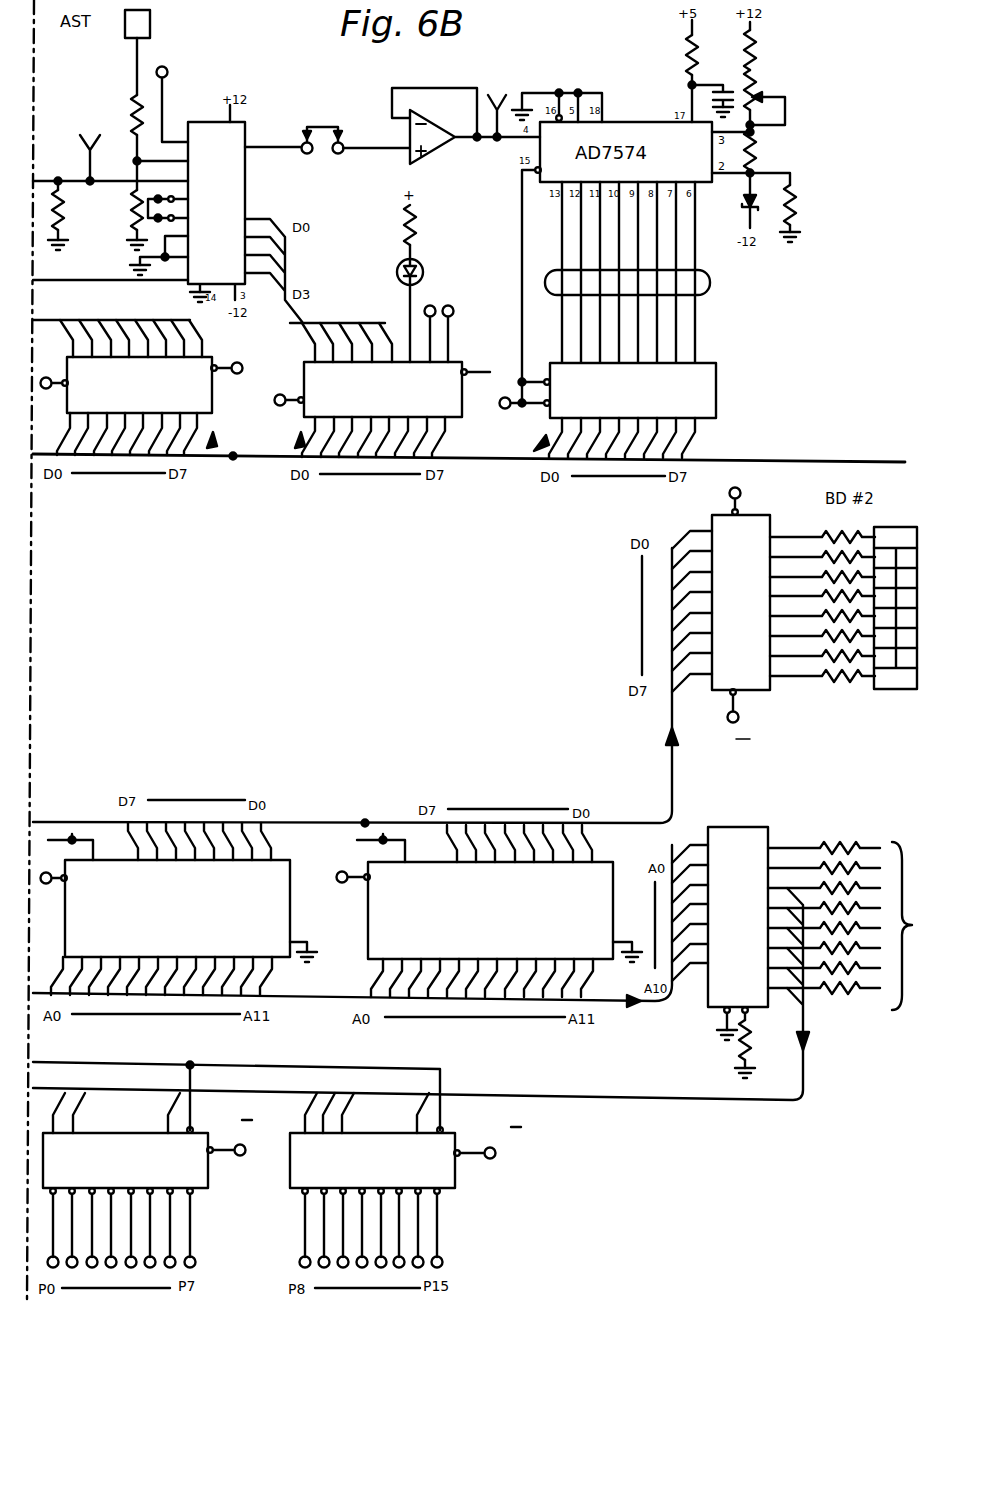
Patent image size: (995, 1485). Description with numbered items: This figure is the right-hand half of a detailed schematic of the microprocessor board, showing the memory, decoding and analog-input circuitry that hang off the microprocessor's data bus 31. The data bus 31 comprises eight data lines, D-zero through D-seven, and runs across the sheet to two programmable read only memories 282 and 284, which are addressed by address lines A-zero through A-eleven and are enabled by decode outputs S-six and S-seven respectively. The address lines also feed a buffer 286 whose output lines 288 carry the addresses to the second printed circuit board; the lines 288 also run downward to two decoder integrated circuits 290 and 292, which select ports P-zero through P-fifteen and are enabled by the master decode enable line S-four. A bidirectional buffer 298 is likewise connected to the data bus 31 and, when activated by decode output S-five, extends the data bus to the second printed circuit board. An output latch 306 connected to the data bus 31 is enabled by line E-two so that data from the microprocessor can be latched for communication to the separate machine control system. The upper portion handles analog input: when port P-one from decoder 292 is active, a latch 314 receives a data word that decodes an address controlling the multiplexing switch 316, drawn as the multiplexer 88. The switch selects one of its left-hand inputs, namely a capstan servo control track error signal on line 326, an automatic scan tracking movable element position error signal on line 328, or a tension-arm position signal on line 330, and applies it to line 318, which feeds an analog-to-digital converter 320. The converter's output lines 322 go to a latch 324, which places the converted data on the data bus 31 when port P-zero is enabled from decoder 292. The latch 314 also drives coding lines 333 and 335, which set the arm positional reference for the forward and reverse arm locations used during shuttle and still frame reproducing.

The data bus 31 is at (233, 459).
The multiplexer 88 is at (216, 196).
The programmable read only memory 282 is at (290, 873).
The programmable read only memory 284 is at (614, 870).
The buffer 286 is at (737, 827).
The output lines 288 is at (912, 925).
The decoder integrated circuit 290 is at (455, 1180).
The decoder integrated circuit 292 is at (208, 1176).
The bidirectional buffer 298 is at (763, 692).
The output latch 306 is at (212, 392).
The latch 314 is at (462, 416).
The multiplexing switch 316 is at (248, 179).
The line 318 is at (283, 148).
The analog-to-digital converter 320 is at (506, 156).
The output lines 322 is at (710, 283).
The latch 324 is at (716, 379).
The line 326 is at (163, 98).
The line 328 is at (137, 60).
The line 330 is at (110, 189).
The coding line 333 is at (453, 311).
The coding line 335 is at (438, 338).